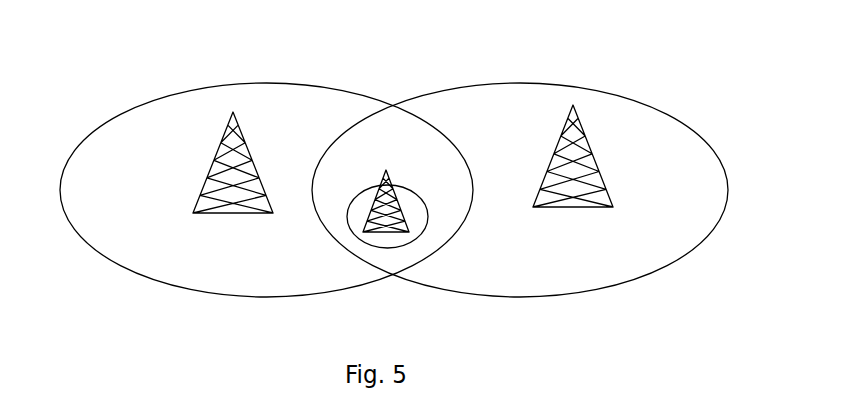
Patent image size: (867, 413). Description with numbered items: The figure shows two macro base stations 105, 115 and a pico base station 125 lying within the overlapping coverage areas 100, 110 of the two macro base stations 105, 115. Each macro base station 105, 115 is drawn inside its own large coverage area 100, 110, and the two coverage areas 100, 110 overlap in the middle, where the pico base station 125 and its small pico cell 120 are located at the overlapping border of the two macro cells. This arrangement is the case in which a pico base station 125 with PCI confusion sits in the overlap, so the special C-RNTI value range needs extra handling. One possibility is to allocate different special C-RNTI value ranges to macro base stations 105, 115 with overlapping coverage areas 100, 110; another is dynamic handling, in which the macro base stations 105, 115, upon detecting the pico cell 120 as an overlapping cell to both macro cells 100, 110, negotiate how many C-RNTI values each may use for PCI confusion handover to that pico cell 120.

The coverage area 100 is at (168, 95).
The macro base station 105 is at (212, 167).
The coverage area 110 is at (563, 85).
The macro base station 115 is at (593, 155).
The pico cell 120 is at (405, 245).
The pico base station 125 is at (348, 210).